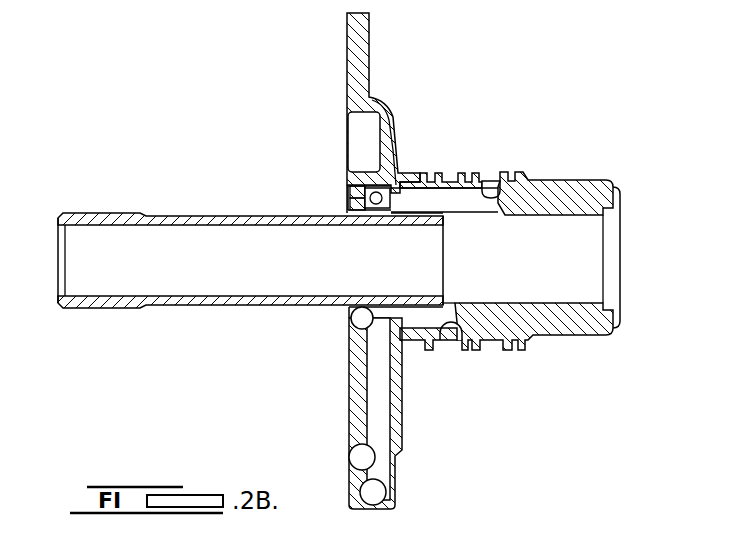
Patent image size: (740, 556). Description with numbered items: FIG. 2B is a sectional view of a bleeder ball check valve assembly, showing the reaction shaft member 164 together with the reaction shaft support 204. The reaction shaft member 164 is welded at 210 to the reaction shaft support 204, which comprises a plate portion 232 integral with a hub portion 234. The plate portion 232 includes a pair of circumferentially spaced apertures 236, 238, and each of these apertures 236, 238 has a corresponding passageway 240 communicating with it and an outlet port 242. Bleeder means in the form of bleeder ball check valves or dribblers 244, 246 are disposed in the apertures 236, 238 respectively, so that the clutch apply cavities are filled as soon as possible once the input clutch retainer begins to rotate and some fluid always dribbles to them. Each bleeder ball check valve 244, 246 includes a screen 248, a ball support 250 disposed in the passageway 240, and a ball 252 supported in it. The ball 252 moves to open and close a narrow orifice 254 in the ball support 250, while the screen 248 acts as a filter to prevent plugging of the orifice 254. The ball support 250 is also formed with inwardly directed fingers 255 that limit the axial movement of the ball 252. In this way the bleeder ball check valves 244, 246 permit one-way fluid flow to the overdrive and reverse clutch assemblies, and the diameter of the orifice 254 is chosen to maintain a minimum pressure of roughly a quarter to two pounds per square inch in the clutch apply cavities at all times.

The reaction shaft member 164 is at (172, 216).
The reaction shaft support 204 is at (345, 50).
The plate portion 232 is at (392, 137).
The inwardly directed fingers 255 is at (394, 178).
The passageway 240 is at (410, 180).
The outlet port 242 is at (490, 178).
The hub portion 234 is at (548, 193).
The ball 252 is at (395, 190).
The weld 210 is at (392, 215).
The orifice 254 is at (352, 193).
The screen 248 is at (350, 210).
The bleeder ball check valve 244 is at (329, 162).
The bleeder ball check valve 246 is at (352, 183).
The aperture 236 is at (325, 186).
The aperture 238 is at (350, 188).
The ball support 250 is at (360, 209).